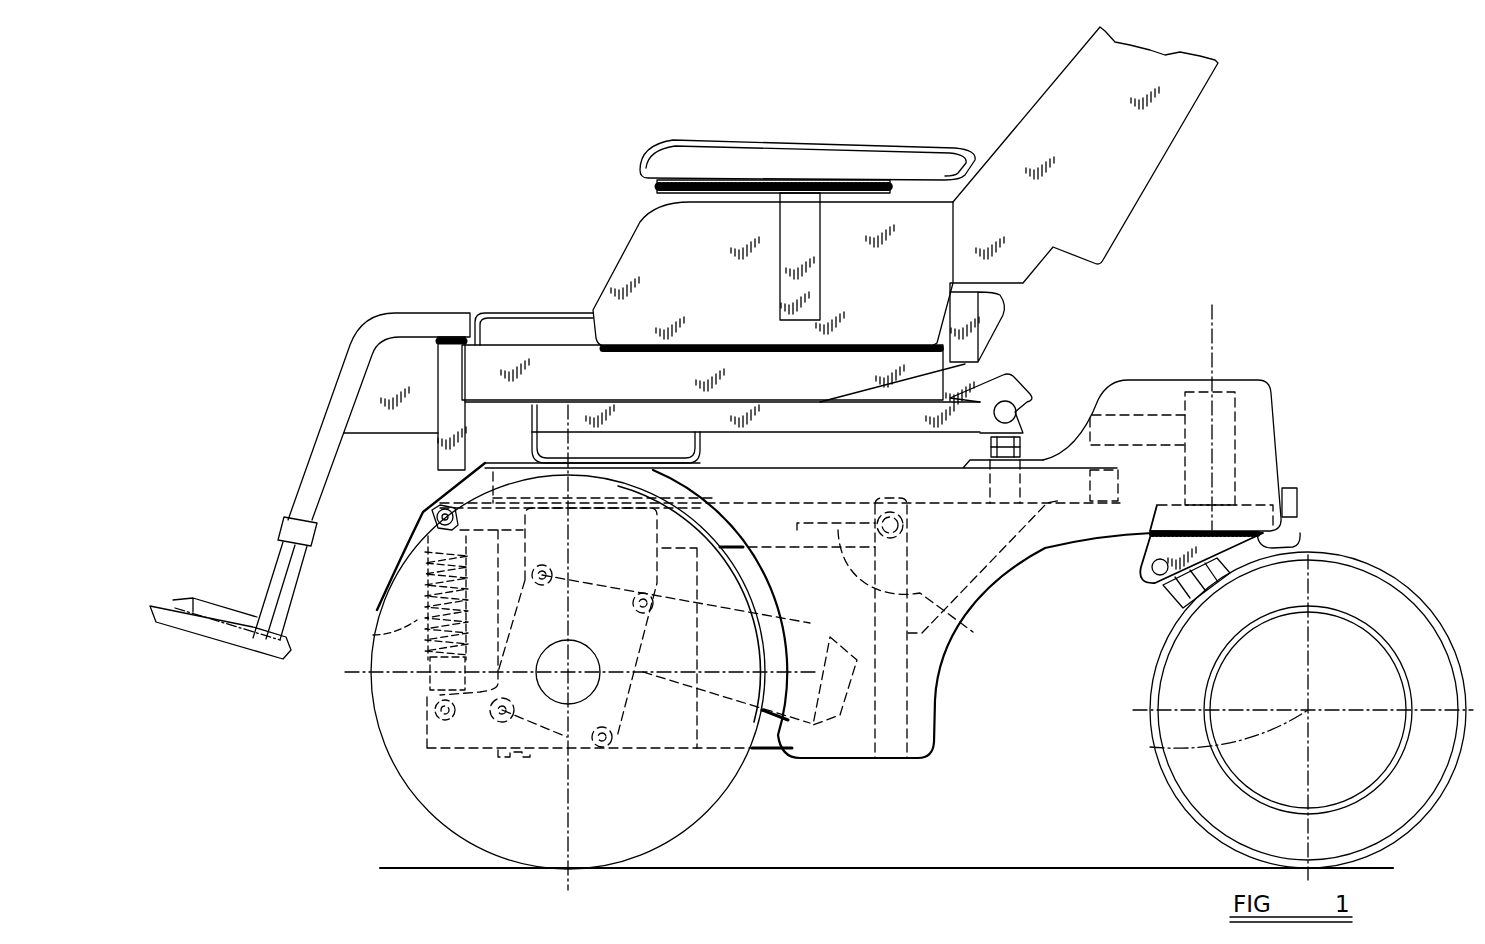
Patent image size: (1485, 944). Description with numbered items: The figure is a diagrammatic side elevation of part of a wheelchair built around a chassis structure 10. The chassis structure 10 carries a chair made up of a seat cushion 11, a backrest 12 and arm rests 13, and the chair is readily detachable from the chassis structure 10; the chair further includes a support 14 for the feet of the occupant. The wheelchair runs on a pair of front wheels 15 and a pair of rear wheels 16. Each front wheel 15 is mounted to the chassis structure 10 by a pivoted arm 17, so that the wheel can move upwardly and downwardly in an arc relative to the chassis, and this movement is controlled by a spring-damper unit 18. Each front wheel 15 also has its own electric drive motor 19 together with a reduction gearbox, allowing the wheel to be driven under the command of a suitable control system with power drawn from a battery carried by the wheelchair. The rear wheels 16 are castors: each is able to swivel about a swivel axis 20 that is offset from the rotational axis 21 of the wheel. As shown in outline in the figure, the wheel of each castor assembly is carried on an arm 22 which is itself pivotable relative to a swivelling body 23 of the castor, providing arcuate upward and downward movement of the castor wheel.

The chassis structure 10 is at (1073, 503).
The seat cushion 11 is at (523, 315).
The backrest 12 is at (1027, 110).
The arm rests 13 is at (893, 146).
The support 14 is at (263, 484).
The front wheels 15 is at (739, 785).
The rear wheels 16 is at (1164, 787).
The pivoted arm 17 is at (983, 633).
The spring-damper unit 18 is at (373, 635).
The electric drive motor 19 is at (735, 708).
The swivel axis 20 is at (1222, 335).
The rotational axis 21 is at (1150, 747).
The arm 22 is at (1170, 598).
The swivelling body 23 is at (1300, 533).